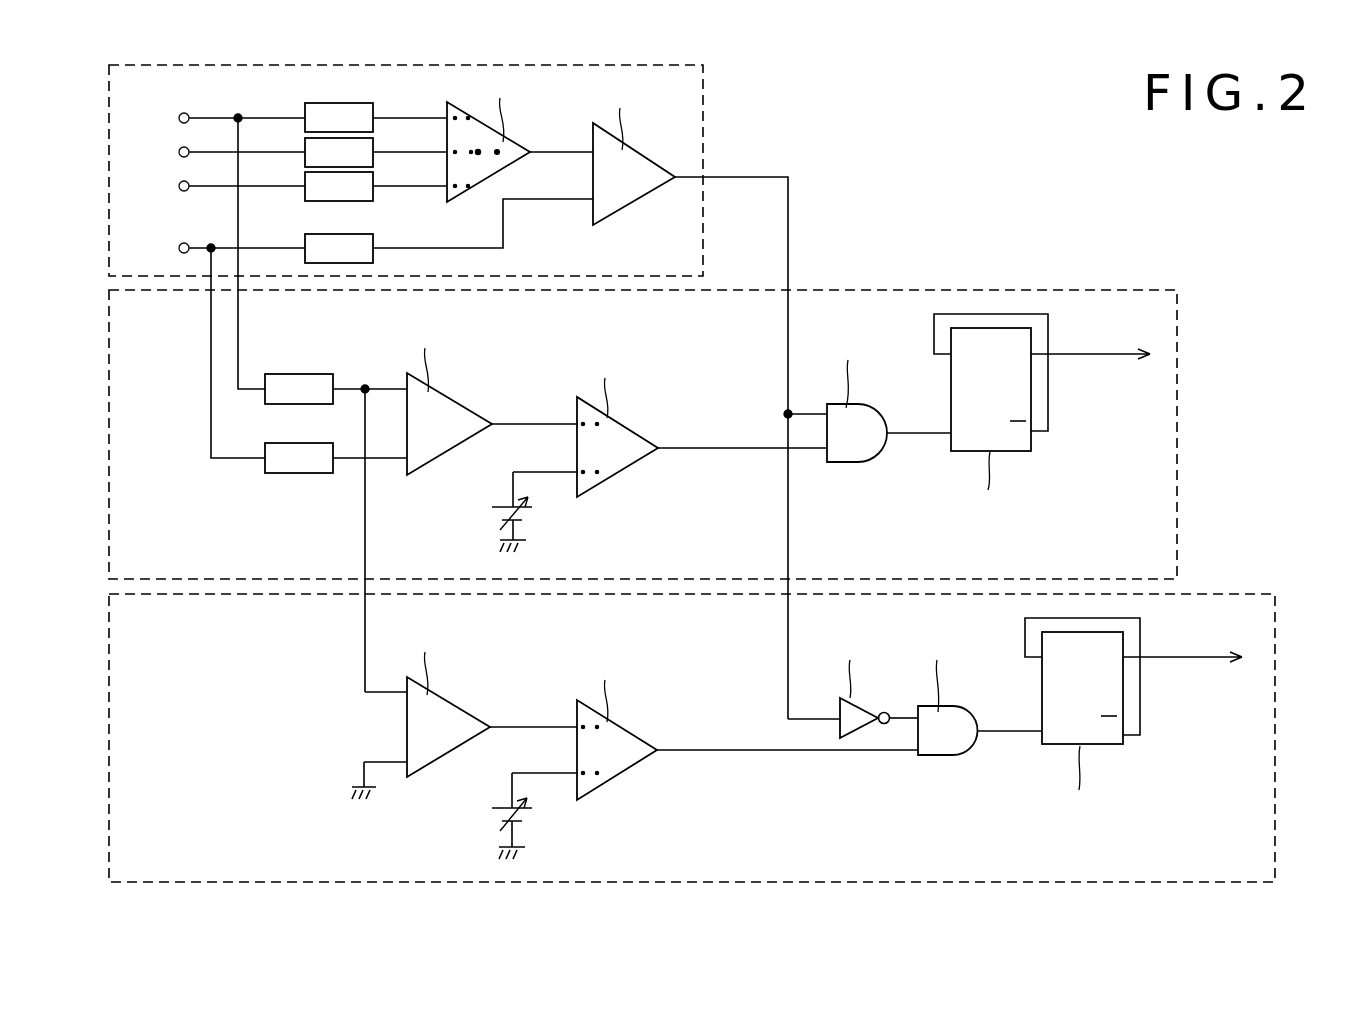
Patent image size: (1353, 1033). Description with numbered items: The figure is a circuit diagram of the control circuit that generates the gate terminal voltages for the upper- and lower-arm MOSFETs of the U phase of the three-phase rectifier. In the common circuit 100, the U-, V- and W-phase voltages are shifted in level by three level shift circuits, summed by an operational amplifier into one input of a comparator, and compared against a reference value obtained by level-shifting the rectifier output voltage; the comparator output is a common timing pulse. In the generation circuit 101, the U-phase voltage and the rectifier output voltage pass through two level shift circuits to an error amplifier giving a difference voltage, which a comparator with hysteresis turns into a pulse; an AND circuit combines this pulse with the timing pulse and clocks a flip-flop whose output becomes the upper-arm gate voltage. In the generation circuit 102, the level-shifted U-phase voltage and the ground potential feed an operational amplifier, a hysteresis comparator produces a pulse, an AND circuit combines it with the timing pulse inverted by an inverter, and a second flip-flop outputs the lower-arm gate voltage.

The common circuit 100 is at (703, 112).
The generation circuit for gate terminal voltage VHGD 101 is at (1077, 290).
The generation circuit for gate terminal voltage VLGD 102 is at (1238, 594).